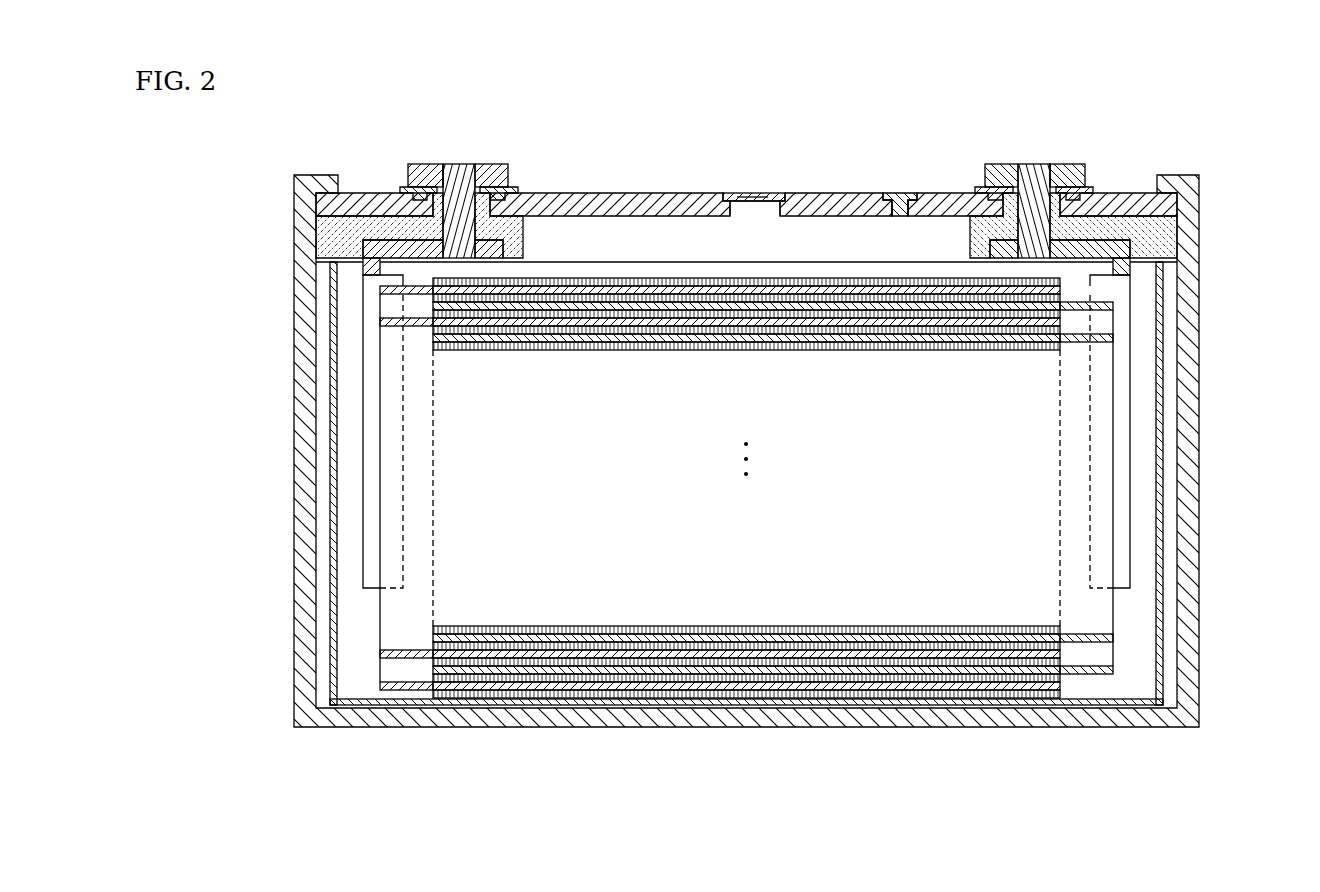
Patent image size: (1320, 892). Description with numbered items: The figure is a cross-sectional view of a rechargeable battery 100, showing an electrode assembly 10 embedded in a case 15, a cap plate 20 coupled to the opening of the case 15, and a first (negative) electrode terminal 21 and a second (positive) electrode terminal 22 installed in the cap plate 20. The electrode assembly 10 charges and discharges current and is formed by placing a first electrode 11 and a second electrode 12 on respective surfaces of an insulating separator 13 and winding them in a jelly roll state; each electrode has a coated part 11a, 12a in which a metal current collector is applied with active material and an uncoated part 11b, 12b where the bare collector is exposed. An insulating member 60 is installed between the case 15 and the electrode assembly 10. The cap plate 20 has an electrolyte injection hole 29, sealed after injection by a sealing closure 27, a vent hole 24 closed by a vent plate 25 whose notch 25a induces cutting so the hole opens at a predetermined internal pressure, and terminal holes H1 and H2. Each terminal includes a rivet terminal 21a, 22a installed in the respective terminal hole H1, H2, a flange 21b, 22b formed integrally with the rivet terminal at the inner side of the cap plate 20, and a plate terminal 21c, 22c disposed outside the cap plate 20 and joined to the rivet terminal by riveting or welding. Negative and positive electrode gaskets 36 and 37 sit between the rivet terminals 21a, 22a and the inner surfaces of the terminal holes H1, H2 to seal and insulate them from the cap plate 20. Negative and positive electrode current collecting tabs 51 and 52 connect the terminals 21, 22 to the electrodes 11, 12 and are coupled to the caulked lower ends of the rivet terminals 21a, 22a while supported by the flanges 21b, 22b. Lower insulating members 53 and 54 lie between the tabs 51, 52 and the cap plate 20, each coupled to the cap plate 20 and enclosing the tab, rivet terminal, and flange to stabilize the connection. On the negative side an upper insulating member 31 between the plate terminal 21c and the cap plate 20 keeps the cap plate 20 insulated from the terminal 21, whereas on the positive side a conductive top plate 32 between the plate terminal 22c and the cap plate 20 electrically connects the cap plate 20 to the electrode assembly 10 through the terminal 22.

The rechargeable battery 100 is at (733, 79).
The electrode assembly 10 is at (749, 550).
The first electrode 11 is at (720, 554).
The coated part 11a is at (522, 690).
The uncoated part 11b is at (405, 690).
The second electrode 12 is at (775, 562).
The coated part 12a is at (977, 676).
The uncoated part 12b is at (1094, 676).
The separator 13 is at (763, 695).
The case 15 is at (1196, 380).
The cap plate 20 is at (815, 200).
The first electrode terminal 21 is at (461, 249).
The rivet terminal 21a is at (462, 260).
The flange 21b is at (513, 240).
The plate terminal 21c is at (460, 157).
The second electrode terminal 22 is at (1072, 195).
The rivet terminal 22a is at (1045, 258).
The flange 22b is at (993, 230).
The plate terminal 22c is at (1088, 165).
The vent hole 24 is at (750, 217).
The vent plate 25 is at (771, 194).
The notch 25a is at (745, 195).
The sealing closure 27 is at (909, 200).
The electrolyte injection hole 29 is at (896, 197).
The upper insulating member 31 is at (418, 165).
The top plate 32 is at (1104, 189).
The negative electrode gasket 36 is at (405, 191).
The positive electrode gasket 37 is at (1012, 186).
The negative electrode current collecting tab 51 is at (361, 399).
The positive electrode current collecting tab 52 is at (1131, 553).
The lower insulating member 53 is at (335, 238).
The lower insulating member 54 is at (1166, 238).
The insulating member 60 is at (1166, 347).
The terminal hole H1 is at (452, 166).
The terminal hole H2 is at (1047, 166).